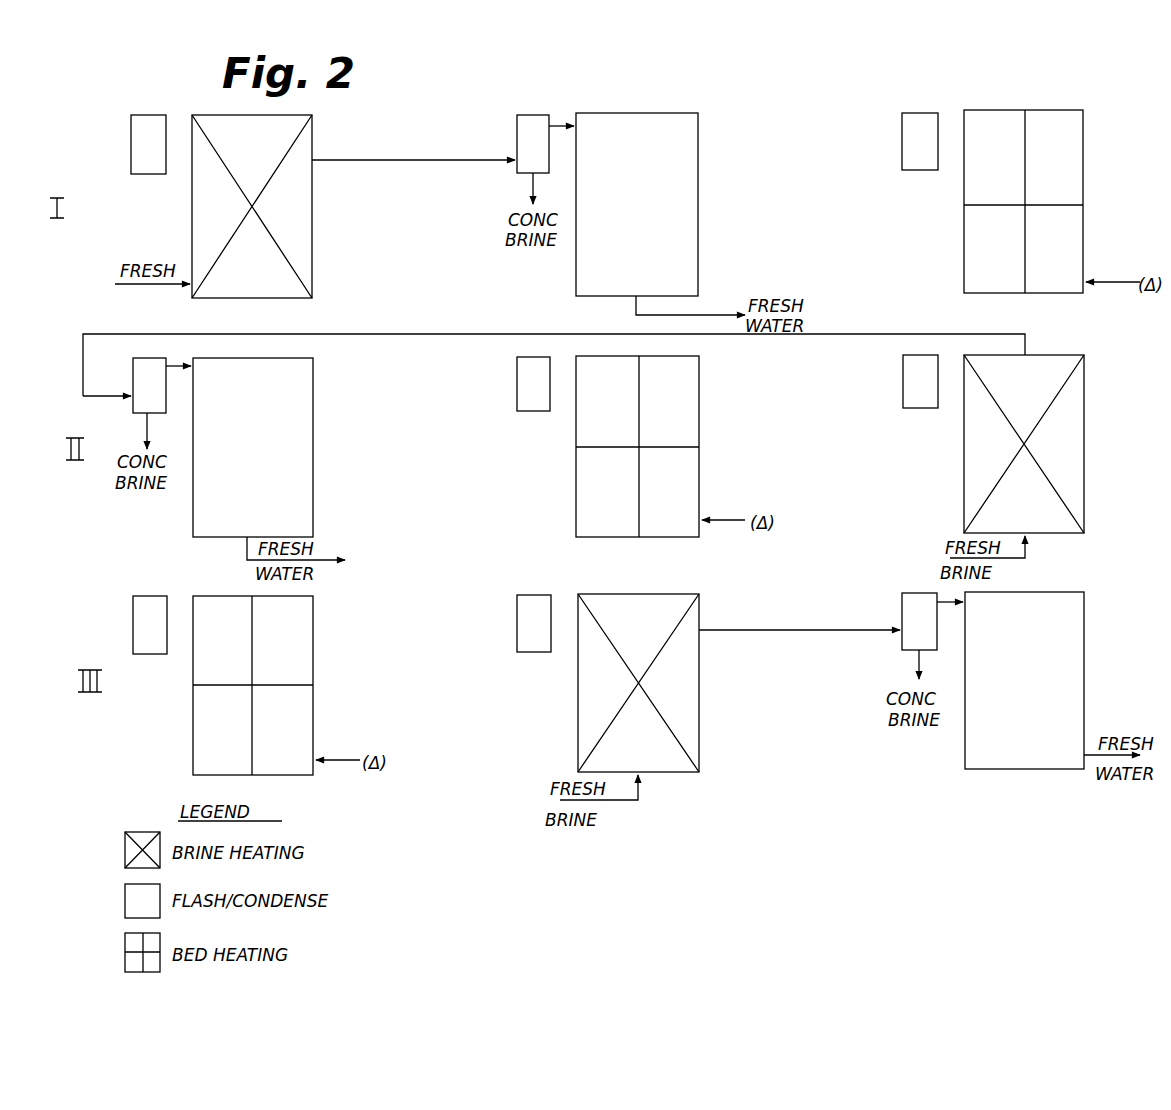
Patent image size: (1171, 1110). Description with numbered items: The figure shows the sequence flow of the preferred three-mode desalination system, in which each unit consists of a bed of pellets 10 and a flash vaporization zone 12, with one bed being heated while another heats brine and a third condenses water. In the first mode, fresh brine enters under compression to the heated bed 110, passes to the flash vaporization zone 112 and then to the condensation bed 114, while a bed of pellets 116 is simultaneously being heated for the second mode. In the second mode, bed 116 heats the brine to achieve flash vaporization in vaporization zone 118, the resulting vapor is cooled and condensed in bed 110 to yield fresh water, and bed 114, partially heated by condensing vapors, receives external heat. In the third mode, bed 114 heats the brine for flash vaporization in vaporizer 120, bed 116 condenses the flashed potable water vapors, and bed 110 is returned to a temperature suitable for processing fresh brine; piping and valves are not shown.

The bed of pellets 10 is at (665, 427).
The flash vaporization zone 12 is at (519, 365).
The heated bed 110 is at (313, 265).
The flash vaporization zone 112 is at (540, 122).
The condensation bed 114 is at (690, 193).
The bed of pellets 116 is at (1078, 242).
The vaporization zone 118 is at (138, 401).
The vaporizer 120 is at (890, 621).